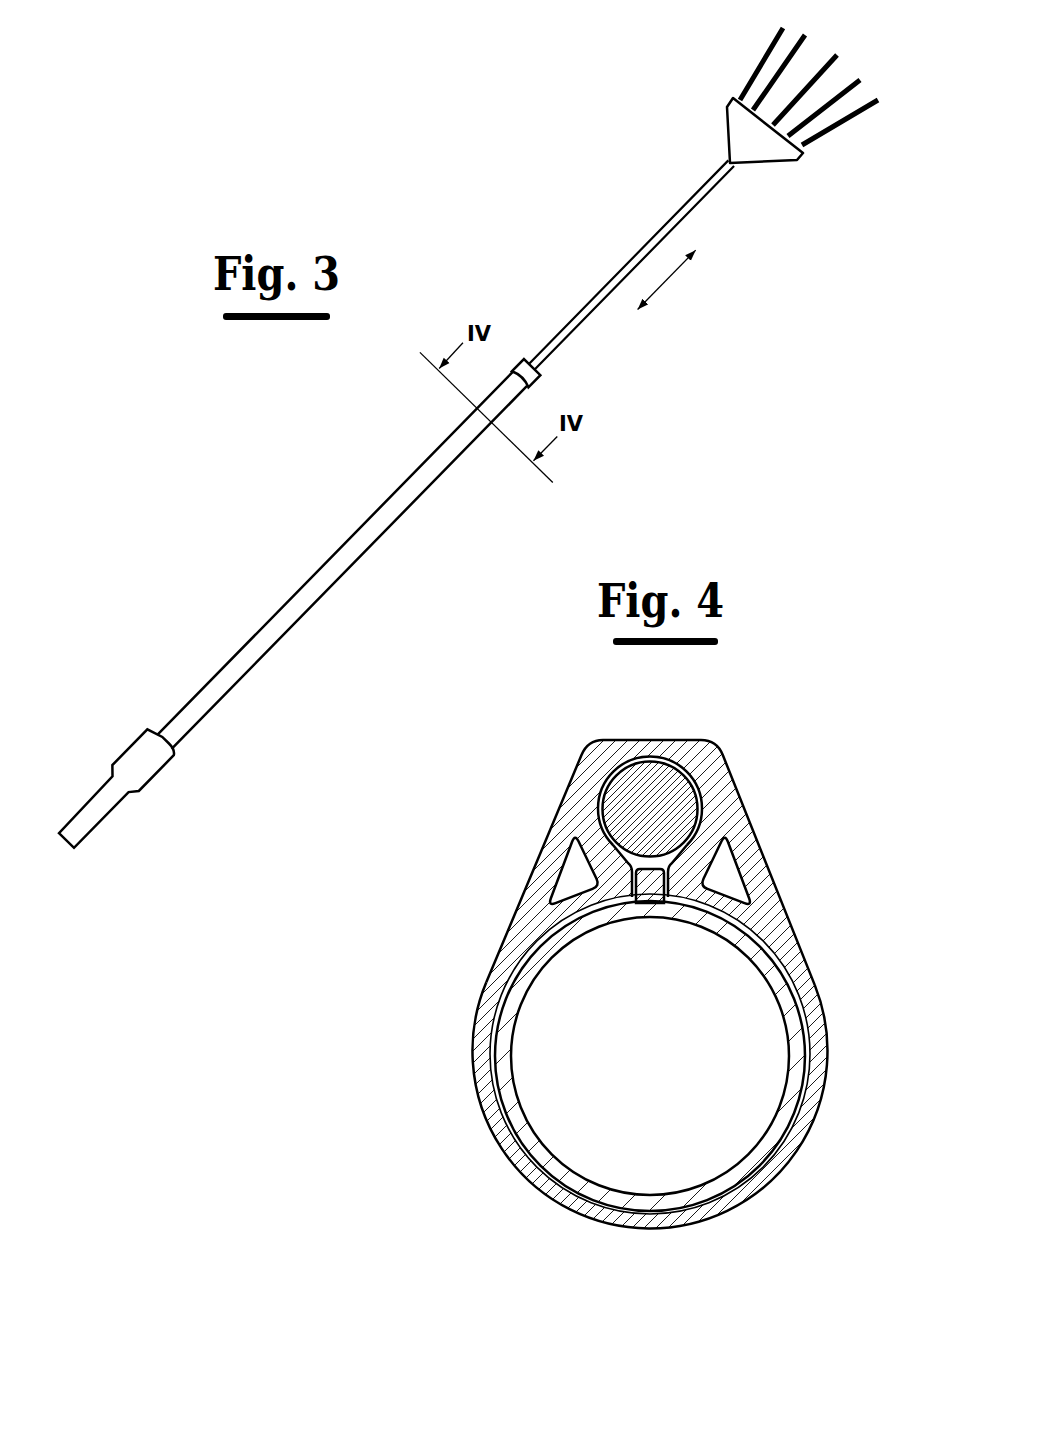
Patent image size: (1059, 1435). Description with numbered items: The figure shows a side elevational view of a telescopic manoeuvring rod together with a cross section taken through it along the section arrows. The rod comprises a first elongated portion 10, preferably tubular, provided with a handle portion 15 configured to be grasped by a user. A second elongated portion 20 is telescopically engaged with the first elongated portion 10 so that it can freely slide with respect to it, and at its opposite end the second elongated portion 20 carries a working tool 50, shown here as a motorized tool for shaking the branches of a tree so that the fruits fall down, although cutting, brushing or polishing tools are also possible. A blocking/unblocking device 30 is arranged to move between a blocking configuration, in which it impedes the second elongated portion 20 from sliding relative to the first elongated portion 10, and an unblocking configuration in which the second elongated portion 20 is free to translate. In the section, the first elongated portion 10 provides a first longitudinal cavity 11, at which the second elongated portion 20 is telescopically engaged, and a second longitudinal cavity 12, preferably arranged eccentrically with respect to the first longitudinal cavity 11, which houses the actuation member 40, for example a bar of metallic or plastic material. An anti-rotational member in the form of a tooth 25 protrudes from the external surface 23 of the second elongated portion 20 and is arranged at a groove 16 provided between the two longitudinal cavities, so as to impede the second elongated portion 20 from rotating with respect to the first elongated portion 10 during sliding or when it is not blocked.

In FIG. 3, the first elongated portion 10 is at (331, 518).
In FIG. 4, the first elongated portion 10 is at (501, 953).
In FIG. 4, the first longitudinal cavity 11 is at (800, 1123).
In FIG. 4, the second longitudinal cavity 12 is at (664, 861).
In FIG. 3, the handle portion 15 is at (132, 757).
In FIG. 4, the groove 16 is at (628, 882).
In FIG. 3, the second elongated portion 20 is at (638, 219).
In FIG. 4, the second elongated portion 20 is at (549, 1176).
In FIG. 4, the external surface 23 is at (770, 952).
In FIG. 4, the tooth 25 is at (665, 890).
In FIG. 3, the blocking/unblocking device 30 is at (530, 343).
In FIG. 4, the actuation member 40 is at (651, 783).
In FIG. 3, the working tool 50 is at (787, 181).